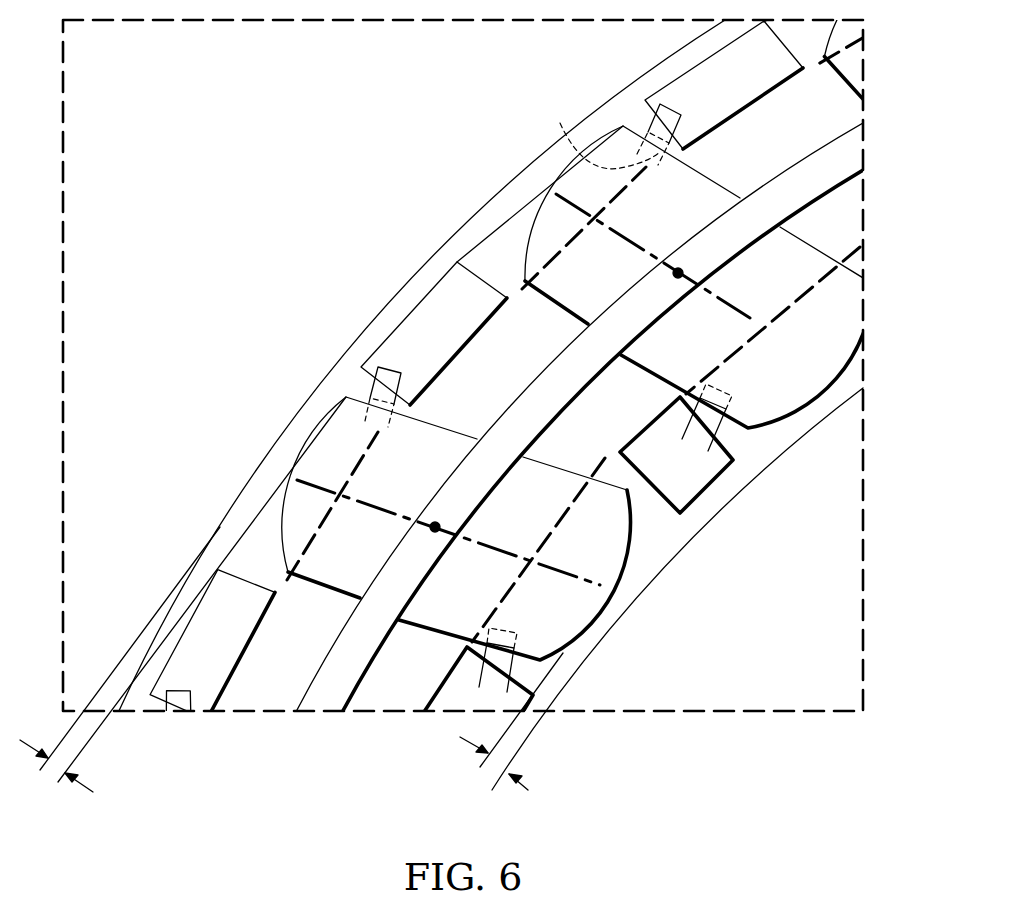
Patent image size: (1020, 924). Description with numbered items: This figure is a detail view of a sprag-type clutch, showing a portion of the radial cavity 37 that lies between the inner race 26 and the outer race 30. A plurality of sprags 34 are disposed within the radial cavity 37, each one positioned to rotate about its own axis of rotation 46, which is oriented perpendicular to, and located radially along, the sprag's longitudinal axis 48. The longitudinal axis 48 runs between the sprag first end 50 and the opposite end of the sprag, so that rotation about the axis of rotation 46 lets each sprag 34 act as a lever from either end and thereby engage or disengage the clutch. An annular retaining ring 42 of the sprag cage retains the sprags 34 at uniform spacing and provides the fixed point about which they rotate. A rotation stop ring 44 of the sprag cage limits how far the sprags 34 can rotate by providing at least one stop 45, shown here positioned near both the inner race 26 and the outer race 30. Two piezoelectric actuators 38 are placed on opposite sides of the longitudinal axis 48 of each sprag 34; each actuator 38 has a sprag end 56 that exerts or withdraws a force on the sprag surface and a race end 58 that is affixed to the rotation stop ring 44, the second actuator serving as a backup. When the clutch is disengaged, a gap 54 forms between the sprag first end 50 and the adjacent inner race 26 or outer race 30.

The inner race 26 is at (782, 646).
The outer race 30 is at (179, 168).
The sprags 34 is at (493, 223).
The radial cavity 37 is at (832, 107).
The actuators 38 is at (380, 372).
The annular retaining ring 42 is at (565, 400).
The rotation stop ring 44 is at (567, 240).
The stop 45 is at (440, 298).
The axis of rotation 46 is at (693, 267).
The longitudinal axis 48 is at (548, 196).
The sprag first end 50 is at (758, 450).
The gap 54 is at (90, 790).
The sprag end 56 is at (560, 123).
The race end 58 is at (655, 100).